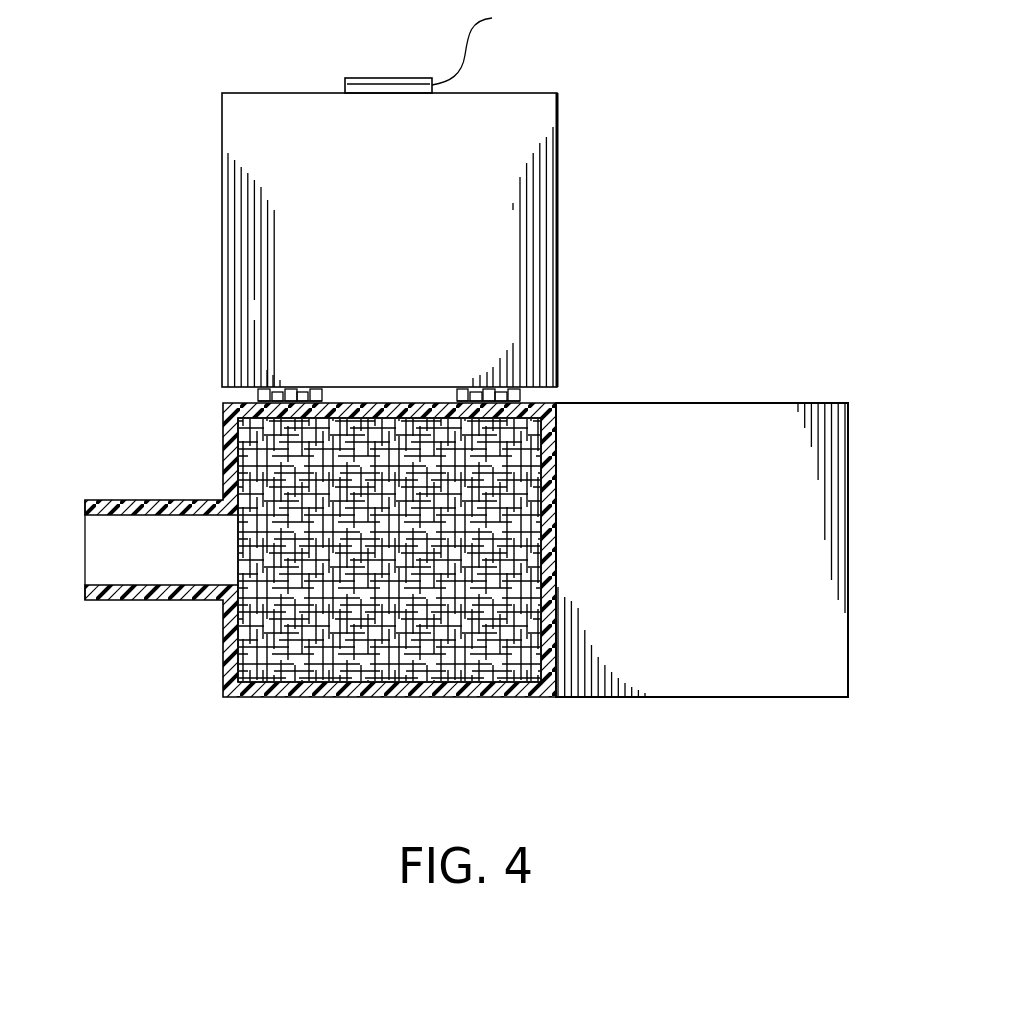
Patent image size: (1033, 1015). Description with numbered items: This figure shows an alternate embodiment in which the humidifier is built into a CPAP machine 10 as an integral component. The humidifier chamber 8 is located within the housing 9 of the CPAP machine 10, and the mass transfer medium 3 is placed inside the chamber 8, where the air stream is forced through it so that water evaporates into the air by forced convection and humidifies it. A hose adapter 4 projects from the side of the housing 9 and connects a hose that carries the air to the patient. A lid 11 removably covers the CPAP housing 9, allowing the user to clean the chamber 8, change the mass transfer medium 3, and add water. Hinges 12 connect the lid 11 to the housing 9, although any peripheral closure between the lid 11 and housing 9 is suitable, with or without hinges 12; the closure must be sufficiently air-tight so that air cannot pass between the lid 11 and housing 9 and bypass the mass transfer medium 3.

The mass transfer medium 3 is at (278, 475).
The hose adapter 4 is at (93, 548).
The humidifier chamber 8 is at (365, 652).
The housing 9 is at (228, 626).
The CPAP machine 10 is at (684, 720).
The lid 11 is at (540, 197).
The hinges 12 is at (520, 402).